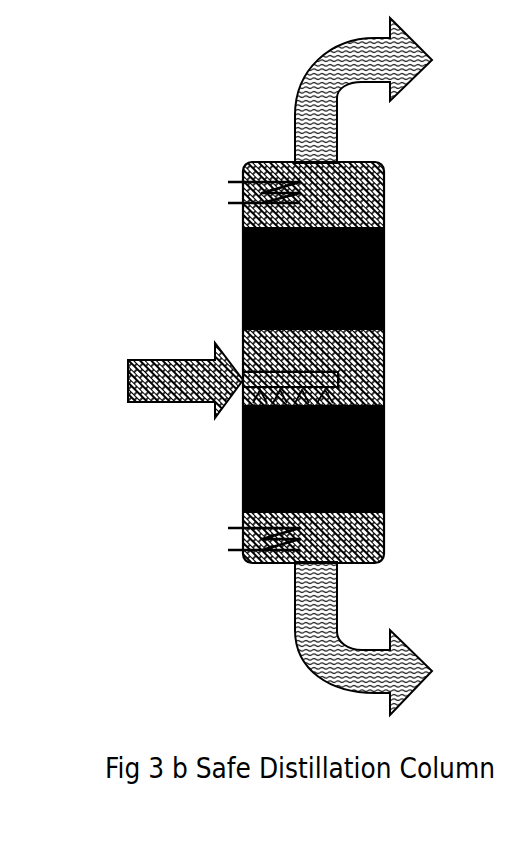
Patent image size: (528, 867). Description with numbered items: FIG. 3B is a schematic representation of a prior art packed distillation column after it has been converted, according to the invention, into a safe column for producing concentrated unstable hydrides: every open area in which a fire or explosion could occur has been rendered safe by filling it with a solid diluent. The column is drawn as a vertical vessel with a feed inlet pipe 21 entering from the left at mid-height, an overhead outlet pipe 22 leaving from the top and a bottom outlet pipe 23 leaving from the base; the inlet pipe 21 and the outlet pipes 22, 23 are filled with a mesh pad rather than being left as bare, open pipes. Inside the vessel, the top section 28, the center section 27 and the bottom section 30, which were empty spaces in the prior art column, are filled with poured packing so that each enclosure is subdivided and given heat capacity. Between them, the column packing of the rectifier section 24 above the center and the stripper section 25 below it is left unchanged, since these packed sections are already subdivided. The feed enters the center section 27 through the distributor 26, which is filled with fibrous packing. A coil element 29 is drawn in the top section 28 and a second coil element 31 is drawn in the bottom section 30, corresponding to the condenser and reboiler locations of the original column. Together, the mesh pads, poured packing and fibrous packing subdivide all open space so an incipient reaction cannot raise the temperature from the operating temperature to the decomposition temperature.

The inlet pipe 21 is at (155, 380).
The outlet pipe 22 is at (398, 90).
The outlet pipe 23 is at (404, 638).
The rectifier section 24 is at (384, 265).
The stripper section 25 is at (384, 460).
The distributor 26 is at (277, 371).
The center section 27 is at (350, 369).
The top section 28 is at (360, 197).
The upper heating element 29 is at (239, 190).
The bottom section 30 is at (377, 531).
The lower heating element 31 is at (238, 533).